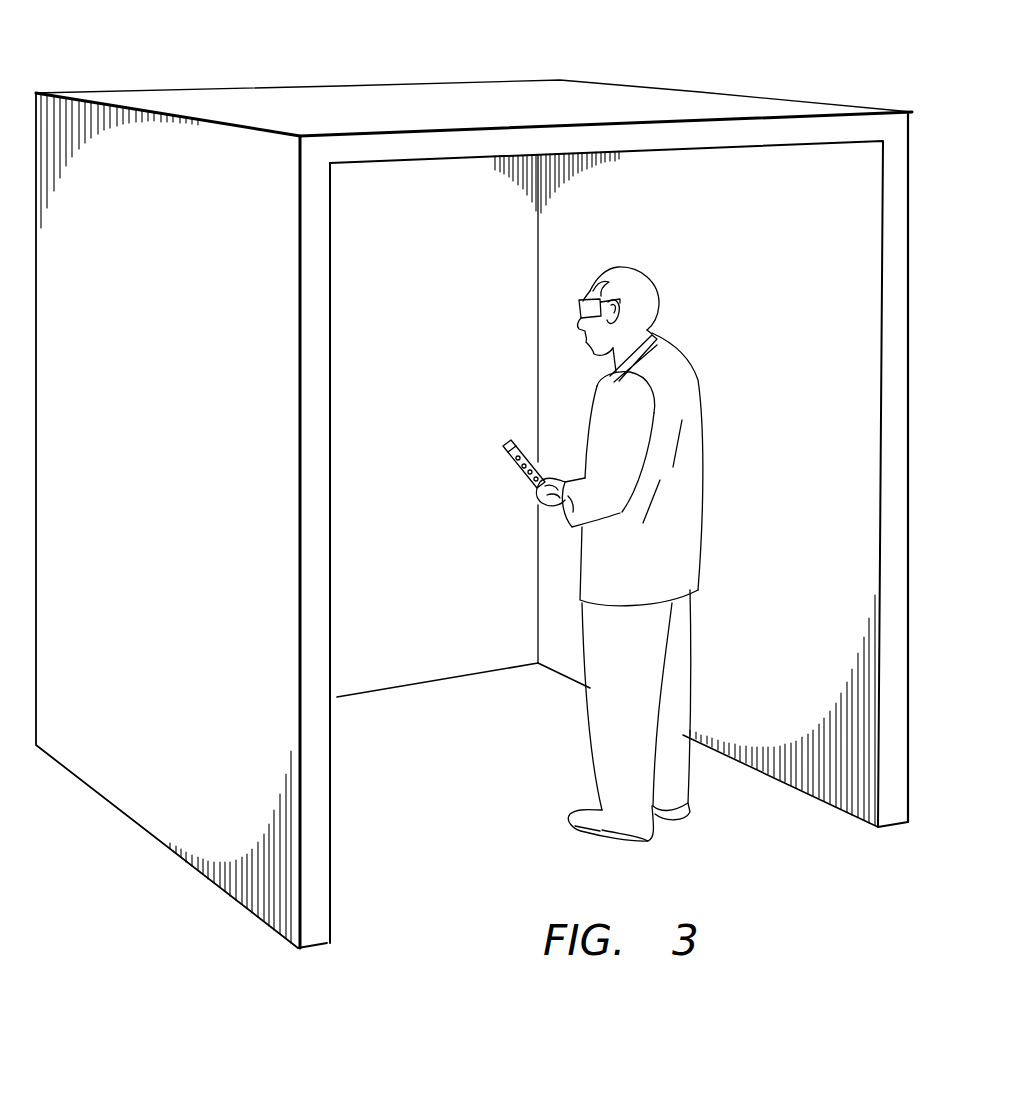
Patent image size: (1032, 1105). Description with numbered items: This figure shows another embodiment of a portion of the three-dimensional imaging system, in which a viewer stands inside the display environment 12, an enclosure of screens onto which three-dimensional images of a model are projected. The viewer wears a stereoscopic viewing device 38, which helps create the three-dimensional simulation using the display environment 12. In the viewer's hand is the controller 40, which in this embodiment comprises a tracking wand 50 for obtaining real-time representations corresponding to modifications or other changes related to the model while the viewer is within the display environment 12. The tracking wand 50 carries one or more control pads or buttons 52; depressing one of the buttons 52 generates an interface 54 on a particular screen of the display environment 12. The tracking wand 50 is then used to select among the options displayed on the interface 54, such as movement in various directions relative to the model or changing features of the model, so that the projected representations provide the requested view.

The display environment 12 is at (787, 81).
The stereoscopic viewing device 38 is at (580, 310).
The controller 40 is at (507, 441).
The tracking wand 50 is at (525, 472).
The buttons 52 is at (515, 460).
The interface 54 is at (440, 273).